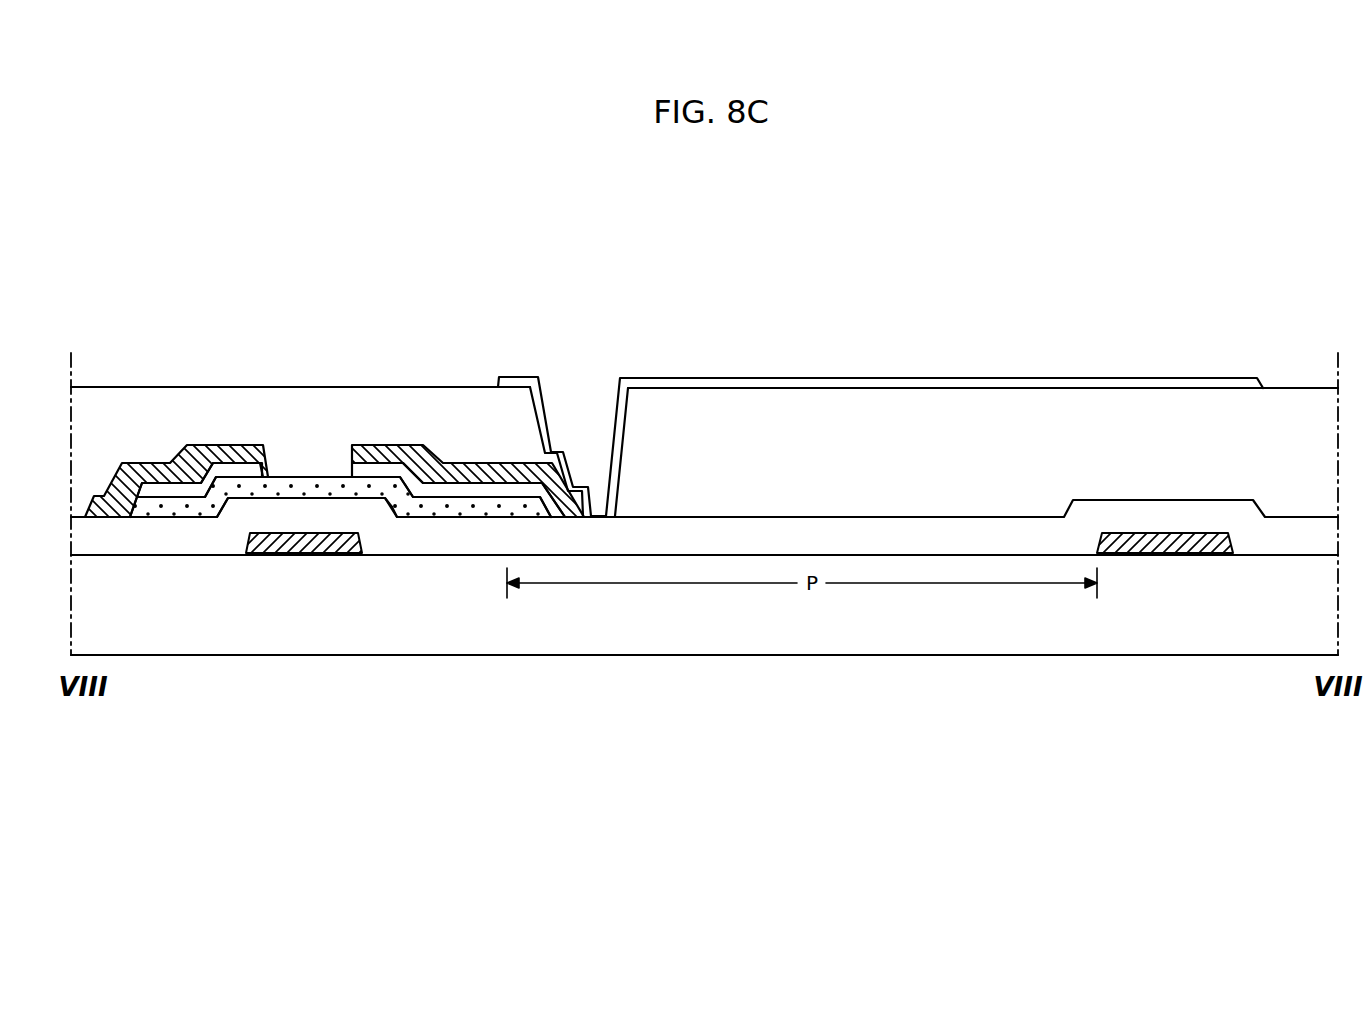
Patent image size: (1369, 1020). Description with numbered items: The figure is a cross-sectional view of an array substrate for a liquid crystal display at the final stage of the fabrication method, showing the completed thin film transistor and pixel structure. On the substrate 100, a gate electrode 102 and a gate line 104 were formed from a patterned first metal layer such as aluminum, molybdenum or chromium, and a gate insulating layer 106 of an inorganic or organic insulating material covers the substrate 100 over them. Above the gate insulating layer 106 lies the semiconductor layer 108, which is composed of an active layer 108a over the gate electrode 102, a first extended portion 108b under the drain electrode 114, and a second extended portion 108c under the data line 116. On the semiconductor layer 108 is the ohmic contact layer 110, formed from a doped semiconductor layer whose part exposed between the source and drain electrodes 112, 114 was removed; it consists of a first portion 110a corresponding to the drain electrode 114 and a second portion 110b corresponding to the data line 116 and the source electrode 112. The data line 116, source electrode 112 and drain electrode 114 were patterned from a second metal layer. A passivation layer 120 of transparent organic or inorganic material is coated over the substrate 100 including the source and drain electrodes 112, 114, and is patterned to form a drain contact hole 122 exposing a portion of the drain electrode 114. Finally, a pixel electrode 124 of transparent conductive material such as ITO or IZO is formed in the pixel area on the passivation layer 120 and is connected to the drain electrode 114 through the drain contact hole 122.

The substrate 100 is at (720, 633).
The gate electrode 102 is at (302, 545).
The gate line 104 is at (1168, 548).
The gate insulating layer 106 is at (898, 530).
The semiconductor layer 108 is at (340, 640).
The active layer 108a is at (312, 493).
The first extended portion 108b is at (471, 597).
The second extended portion 108c is at (166, 504).
The ohmic contact layer 110 is at (349, 375).
The first portion 110a is at (458, 418).
The second portion 110b is at (178, 490).
The source electrode 112 is at (232, 450).
The drain electrode 114 is at (387, 447).
The data line 116 is at (100, 496).
The passivation layer 120 is at (1010, 384).
The drain contact hole 122 is at (587, 405).
The pixel electrode 124 is at (772, 378).